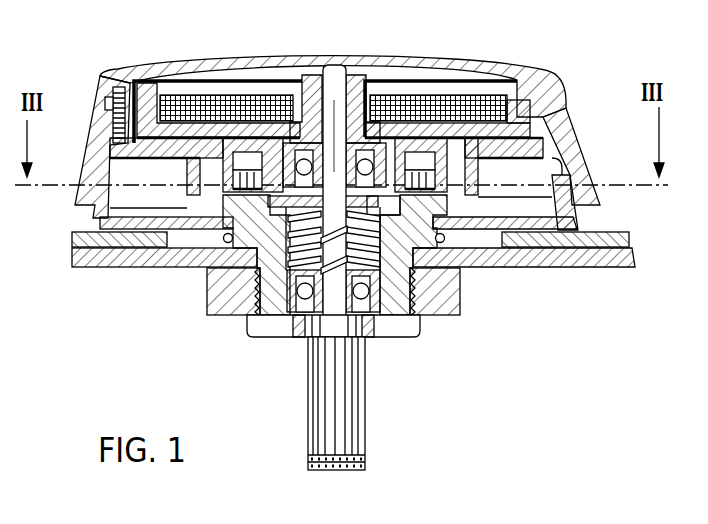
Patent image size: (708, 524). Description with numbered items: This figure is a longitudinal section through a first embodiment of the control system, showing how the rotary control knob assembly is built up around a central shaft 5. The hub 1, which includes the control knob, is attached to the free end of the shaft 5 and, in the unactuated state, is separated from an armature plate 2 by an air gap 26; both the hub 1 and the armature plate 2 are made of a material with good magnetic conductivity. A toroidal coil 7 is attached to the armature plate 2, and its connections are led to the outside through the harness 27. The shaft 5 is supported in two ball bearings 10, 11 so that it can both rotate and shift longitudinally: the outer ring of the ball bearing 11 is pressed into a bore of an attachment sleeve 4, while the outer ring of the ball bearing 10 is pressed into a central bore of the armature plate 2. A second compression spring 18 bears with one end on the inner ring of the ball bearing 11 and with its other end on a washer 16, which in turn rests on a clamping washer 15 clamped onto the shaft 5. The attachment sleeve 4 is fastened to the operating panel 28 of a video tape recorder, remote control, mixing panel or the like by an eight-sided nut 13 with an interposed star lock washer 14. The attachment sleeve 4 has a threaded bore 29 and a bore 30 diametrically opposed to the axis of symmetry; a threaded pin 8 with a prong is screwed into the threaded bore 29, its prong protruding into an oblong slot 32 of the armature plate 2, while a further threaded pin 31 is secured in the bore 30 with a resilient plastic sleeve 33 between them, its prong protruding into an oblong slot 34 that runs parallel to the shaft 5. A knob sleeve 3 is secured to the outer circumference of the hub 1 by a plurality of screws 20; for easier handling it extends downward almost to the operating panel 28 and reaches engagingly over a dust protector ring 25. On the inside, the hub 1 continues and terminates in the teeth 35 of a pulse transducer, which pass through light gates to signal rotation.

The hub 1 is at (173, 72).
The armature plate 2 is at (147, 122).
The knob sleeve 3 is at (100, 133).
The attachment sleeve 4 is at (277, 340).
The shaft 5 is at (326, 296).
The toroidal coil 7 is at (473, 78).
The threaded pin 8 is at (437, 160).
The ball bearing 10 is at (347, 102).
The ball bearing 11 is at (378, 320).
The eight-sided nut 13 is at (444, 300).
The star lock washer 14 is at (476, 273).
The clamping washer 15 is at (230, 215).
The washer 16 is at (290, 210).
The second compression spring 18 is at (245, 314).
The screws 20 is at (107, 100).
The dust protector ring 25 is at (572, 225).
The air gap 26 is at (522, 117).
The harness 27 is at (350, 447).
The operating panel 28 is at (92, 255).
The threaded bore 29 is at (427, 163).
The bore 30 is at (138, 235).
The threaded pin 31 is at (262, 147).
The oblong slot 32 is at (392, 164).
The resilient plastic sleeve 33 is at (230, 147).
The oblong slot 34 is at (278, 163).
The teeth 35 is at (193, 158).